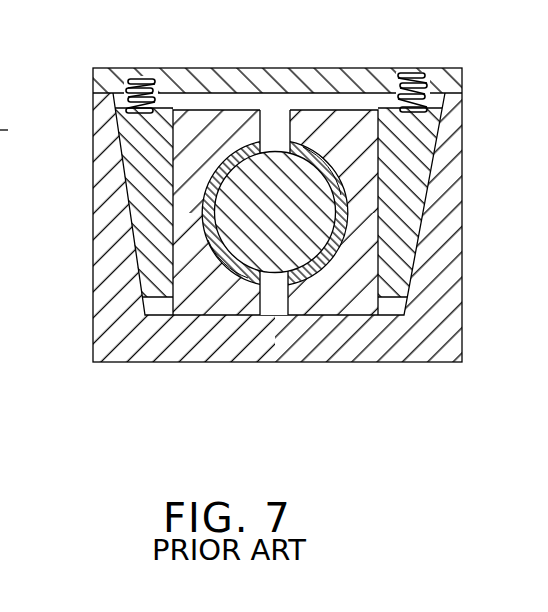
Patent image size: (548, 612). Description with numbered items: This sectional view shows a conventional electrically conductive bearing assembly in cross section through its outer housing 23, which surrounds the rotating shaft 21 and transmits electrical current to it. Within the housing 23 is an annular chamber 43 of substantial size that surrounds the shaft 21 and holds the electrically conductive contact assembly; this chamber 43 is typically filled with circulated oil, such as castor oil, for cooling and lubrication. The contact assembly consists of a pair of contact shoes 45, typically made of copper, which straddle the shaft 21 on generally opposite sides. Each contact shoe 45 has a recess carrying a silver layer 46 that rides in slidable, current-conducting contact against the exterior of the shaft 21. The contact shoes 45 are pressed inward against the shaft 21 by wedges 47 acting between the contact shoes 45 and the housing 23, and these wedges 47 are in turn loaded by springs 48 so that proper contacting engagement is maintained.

The shaft 21 is at (302, 243).
The outer housing 23 is at (443, 182).
The annular chamber 43 is at (262, 103).
The contact shoes 45 is at (183, 254).
The silver layer 46 is at (227, 262).
The wedges 47 is at (131, 163).
The springs 48 is at (146, 68).